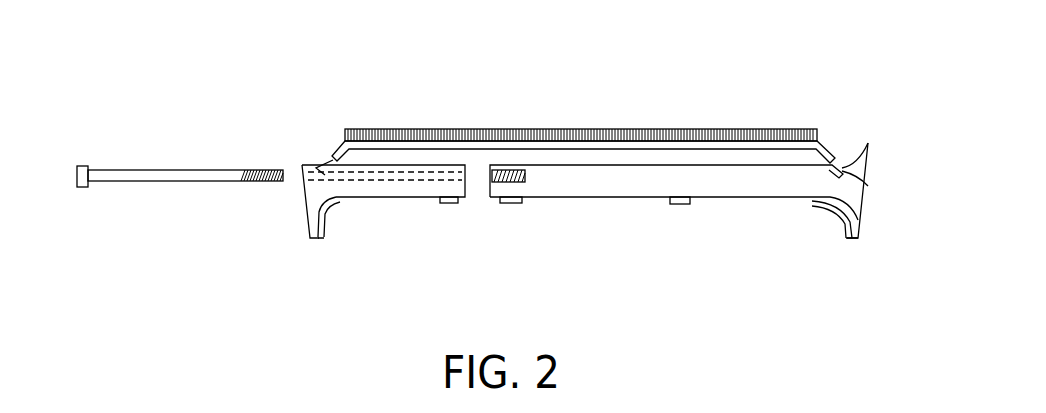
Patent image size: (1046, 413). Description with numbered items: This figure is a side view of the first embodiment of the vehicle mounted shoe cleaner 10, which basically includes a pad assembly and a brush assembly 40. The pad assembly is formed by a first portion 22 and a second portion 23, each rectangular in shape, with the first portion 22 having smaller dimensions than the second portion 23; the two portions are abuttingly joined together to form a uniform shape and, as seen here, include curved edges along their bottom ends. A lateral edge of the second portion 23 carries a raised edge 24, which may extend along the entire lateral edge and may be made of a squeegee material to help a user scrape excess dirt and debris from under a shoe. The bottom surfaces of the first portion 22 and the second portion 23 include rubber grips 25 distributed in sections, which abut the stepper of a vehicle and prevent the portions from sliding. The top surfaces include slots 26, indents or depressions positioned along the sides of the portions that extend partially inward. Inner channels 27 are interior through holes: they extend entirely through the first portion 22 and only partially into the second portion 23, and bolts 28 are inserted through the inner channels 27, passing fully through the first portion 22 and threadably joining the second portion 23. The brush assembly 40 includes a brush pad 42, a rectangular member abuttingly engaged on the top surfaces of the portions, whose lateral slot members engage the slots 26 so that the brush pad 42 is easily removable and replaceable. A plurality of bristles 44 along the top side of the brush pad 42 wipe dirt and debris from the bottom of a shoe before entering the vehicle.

The vehicle mounted shoe cleaner 10 is at (268, 69).
The first portion 22 is at (383, 179).
The second portion 23 is at (603, 196).
The raised edge 24 is at (868, 143).
The rubber grips 25 is at (316, 240).
The slots 26 is at (870, 182).
The inner channels 27 is at (432, 171).
The bolts 28 is at (111, 169).
The brush assembly 40 is at (583, 102).
The brush pad 42 is at (521, 147).
The bristles 44 is at (625, 129).